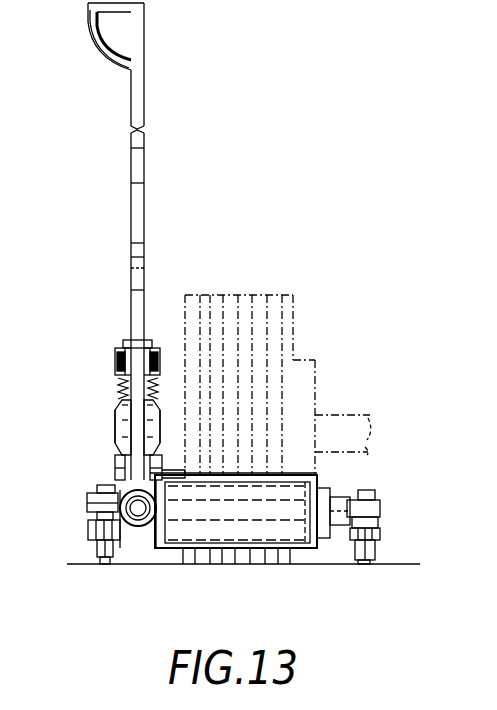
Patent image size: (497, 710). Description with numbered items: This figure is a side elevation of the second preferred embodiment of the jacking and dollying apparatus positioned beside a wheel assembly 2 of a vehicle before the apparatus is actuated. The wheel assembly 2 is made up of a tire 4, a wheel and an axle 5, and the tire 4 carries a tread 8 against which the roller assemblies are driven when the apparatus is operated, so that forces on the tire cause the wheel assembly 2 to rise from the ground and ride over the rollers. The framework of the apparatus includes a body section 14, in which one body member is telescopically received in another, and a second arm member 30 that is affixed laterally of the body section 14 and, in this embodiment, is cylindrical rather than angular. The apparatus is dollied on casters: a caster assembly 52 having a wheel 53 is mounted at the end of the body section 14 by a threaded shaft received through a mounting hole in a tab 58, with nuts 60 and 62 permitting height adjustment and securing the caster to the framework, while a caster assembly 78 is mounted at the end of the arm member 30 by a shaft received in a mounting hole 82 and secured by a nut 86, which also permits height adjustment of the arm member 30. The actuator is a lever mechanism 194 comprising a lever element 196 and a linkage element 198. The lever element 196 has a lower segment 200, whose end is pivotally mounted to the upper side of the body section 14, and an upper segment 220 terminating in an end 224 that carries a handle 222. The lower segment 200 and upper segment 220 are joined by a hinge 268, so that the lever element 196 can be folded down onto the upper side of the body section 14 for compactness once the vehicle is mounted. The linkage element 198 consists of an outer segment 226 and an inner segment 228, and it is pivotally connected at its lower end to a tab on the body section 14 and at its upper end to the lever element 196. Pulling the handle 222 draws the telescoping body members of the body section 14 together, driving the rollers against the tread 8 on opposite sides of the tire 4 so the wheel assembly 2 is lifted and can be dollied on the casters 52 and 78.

The wheel assembly 2 is at (322, 362).
The tire 4 is at (290, 332).
The axle 5 is at (368, 412).
The tread 8 is at (248, 376).
The body section 14 is at (137, 524).
The second arm member 30 is at (180, 546).
The caster assembly 52 is at (86, 548).
The wheel 53 is at (104, 563).
The tab 58 is at (88, 503).
The nut 60 is at (102, 487).
The nut 62 is at (88, 531).
The caster assembly 78 is at (384, 540).
The mounting hole 82 is at (378, 500).
The nut 86 is at (380, 523).
The lever mechanism 194 is at (128, 199).
The lever element 196 is at (145, 150).
The linkage element 198 is at (121, 421).
The lower segment 200 is at (130, 291).
The upper segment 220 is at (145, 184).
The handle 222 is at (99, 40).
The end 224 is at (145, 14).
The outer segment 226 is at (117, 408).
The inner segment 228 is at (160, 398).
The hinge 268 is at (145, 245).